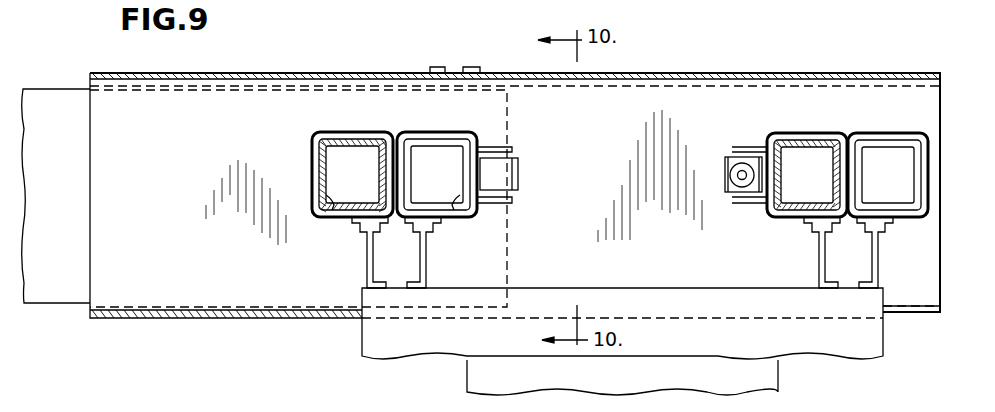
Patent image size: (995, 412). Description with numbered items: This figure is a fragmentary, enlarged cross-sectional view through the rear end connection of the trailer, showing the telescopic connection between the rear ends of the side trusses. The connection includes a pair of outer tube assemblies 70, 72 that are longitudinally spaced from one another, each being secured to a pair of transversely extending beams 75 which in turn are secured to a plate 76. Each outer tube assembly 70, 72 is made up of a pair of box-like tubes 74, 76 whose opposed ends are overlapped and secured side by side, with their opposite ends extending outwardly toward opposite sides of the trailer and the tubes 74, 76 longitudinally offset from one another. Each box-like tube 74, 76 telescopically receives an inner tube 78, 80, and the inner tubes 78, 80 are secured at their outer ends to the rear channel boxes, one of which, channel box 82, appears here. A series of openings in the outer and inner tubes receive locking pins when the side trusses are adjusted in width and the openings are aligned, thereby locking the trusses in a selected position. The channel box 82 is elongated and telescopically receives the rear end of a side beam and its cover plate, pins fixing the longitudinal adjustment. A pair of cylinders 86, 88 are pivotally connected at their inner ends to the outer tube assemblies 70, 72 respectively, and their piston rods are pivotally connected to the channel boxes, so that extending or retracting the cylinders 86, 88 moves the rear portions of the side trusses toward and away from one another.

The outer tube assembly 70 is at (312, 135).
The outer tube assembly 72 is at (796, 133).
The box-like tube 74 is at (362, 132).
The transversely extending beam 75 is at (426, 272).
The box-like tube 76 is at (448, 132).
The inner tube 78 is at (469, 218).
The inner tube 80 is at (340, 218).
The rear channel box 82 is at (168, 266).
The cylinder 86 is at (520, 172).
The cylinder 88 is at (725, 168).